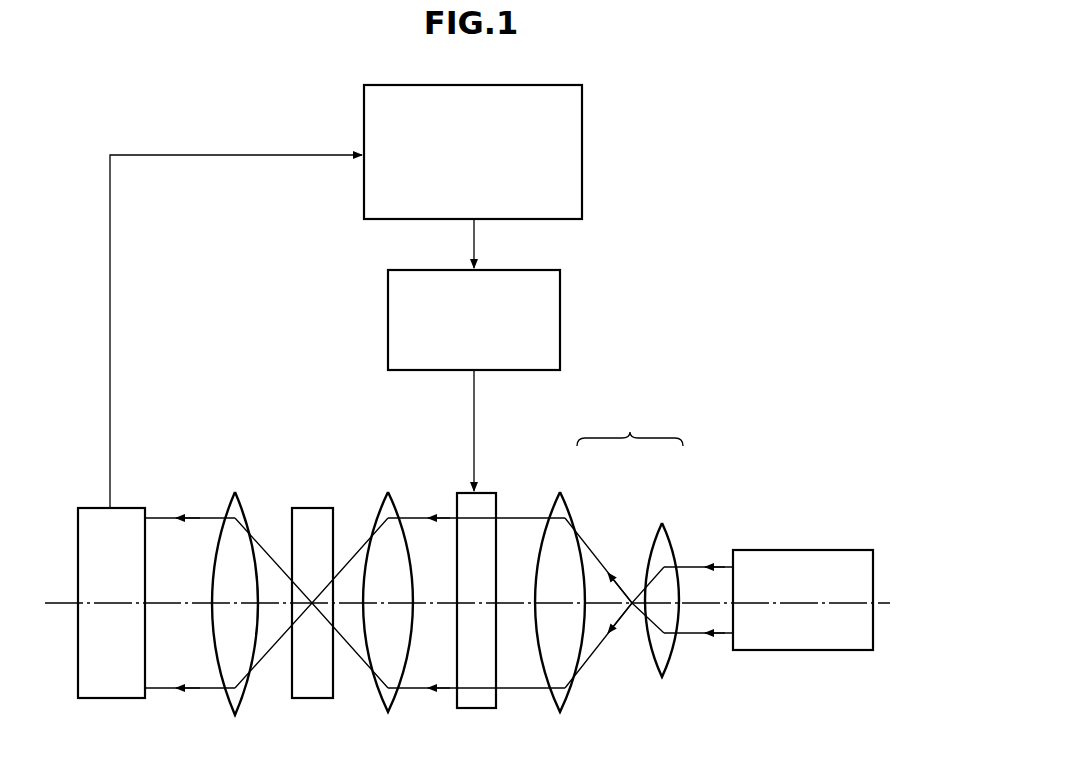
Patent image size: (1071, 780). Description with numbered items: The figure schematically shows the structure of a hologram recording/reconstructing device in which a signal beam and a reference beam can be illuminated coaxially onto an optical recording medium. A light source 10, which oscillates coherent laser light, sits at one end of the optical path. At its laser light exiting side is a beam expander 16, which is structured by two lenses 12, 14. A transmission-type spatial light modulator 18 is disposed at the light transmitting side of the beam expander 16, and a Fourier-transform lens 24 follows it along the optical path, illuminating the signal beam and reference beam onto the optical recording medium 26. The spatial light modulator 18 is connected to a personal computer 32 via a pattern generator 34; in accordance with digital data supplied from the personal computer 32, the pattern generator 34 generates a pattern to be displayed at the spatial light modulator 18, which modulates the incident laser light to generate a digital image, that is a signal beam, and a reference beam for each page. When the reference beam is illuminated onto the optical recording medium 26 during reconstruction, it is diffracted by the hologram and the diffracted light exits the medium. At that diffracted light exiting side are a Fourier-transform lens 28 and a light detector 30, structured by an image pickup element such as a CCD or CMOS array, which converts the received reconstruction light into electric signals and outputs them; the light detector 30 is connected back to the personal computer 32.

The light source 10 is at (801, 550).
The lens 12 is at (664, 528).
The lens 14 is at (562, 512).
The beam expander 16 is at (630, 422).
The spatial light modulator 18 is at (478, 709).
The Fourier-transform lens 24 is at (389, 500).
The optical recording medium 26 is at (311, 508).
The Fourier-transform lens 28 is at (237, 500).
The light detector 30 is at (113, 699).
The personal computer 32 is at (582, 149).
The pattern generator 34 is at (560, 312).